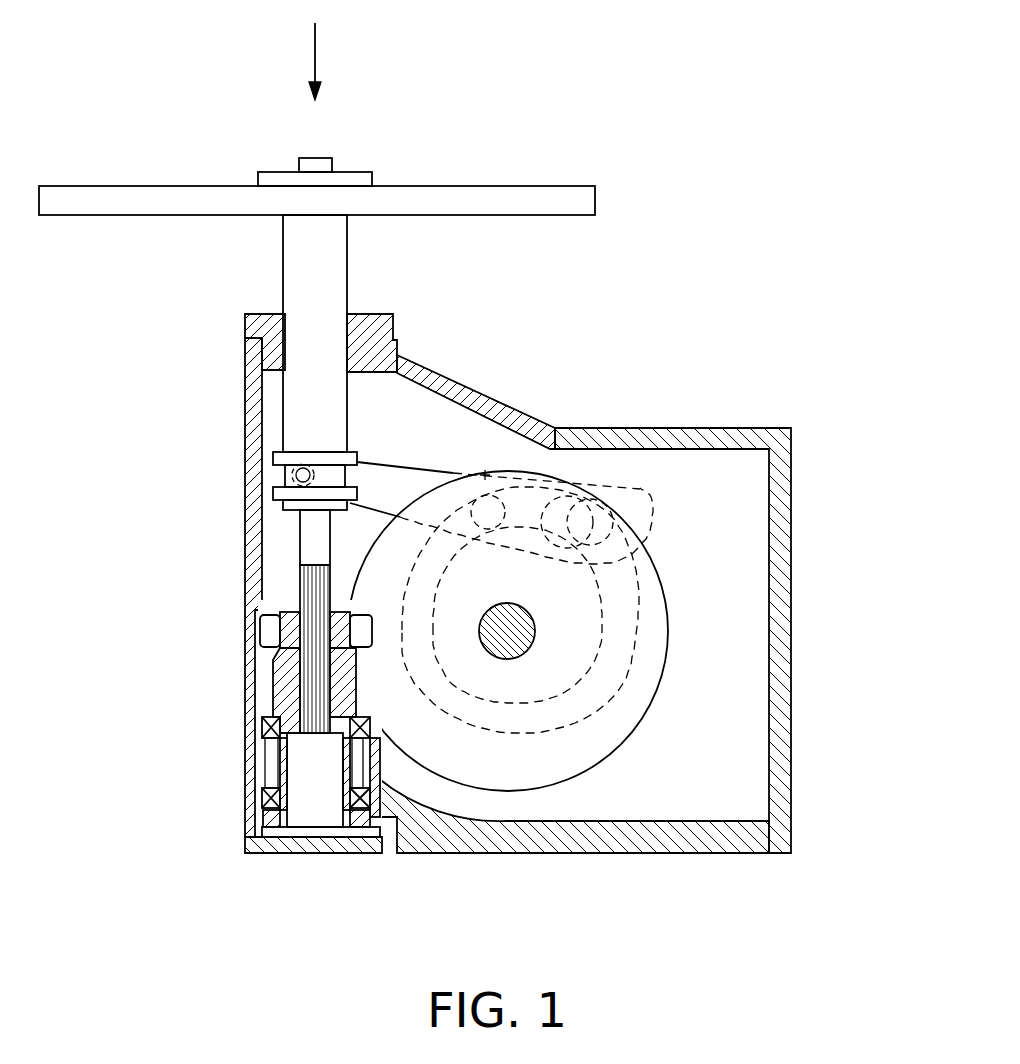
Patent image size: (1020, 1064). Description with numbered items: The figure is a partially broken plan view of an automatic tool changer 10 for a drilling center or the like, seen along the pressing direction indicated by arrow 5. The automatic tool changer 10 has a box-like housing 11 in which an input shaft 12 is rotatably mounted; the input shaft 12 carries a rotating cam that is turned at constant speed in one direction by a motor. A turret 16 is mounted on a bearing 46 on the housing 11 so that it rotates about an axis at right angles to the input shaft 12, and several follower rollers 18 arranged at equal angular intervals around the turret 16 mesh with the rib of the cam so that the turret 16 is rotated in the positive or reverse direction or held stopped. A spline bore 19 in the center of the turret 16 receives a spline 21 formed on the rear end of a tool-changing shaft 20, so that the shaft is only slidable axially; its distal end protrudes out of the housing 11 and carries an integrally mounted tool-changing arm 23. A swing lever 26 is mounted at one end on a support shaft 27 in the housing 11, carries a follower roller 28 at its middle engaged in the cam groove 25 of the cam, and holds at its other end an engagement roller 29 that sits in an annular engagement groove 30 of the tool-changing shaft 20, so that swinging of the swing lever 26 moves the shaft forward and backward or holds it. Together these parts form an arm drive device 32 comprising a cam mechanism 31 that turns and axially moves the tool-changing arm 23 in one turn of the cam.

The pressing direction 5 is at (325, 61).
The automatic tool changer 10 is at (617, 348).
The housing 11 is at (707, 435).
The input shaft 12 is at (513, 627).
The turret 16 is at (283, 690).
The follower roller 18 is at (270, 632).
The spline bore 19 is at (310, 707).
The tool-changing shaft 20 is at (297, 258).
The spline 21 is at (290, 668).
The tool-changing arm 23 is at (498, 205).
The cam groove 25 is at (615, 657).
The swing lever 26 is at (390, 477).
The support shaft 27 is at (611, 493).
The follower roller 28 is at (488, 512).
The engagement roller 29 is at (303, 470).
The annular engagement groove 30 is at (273, 468).
The cam mechanism 31 is at (675, 638).
The arm drive device 32 is at (688, 673).
The bearing 46 is at (262, 727).